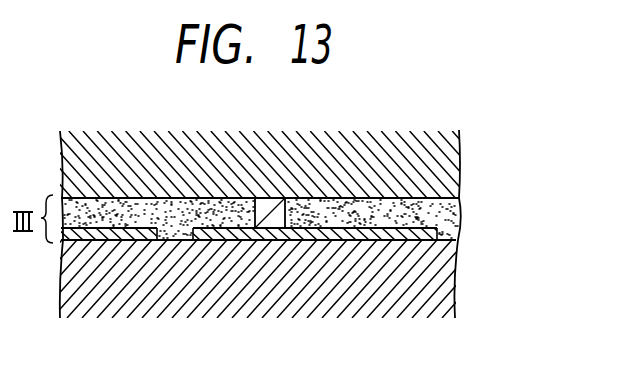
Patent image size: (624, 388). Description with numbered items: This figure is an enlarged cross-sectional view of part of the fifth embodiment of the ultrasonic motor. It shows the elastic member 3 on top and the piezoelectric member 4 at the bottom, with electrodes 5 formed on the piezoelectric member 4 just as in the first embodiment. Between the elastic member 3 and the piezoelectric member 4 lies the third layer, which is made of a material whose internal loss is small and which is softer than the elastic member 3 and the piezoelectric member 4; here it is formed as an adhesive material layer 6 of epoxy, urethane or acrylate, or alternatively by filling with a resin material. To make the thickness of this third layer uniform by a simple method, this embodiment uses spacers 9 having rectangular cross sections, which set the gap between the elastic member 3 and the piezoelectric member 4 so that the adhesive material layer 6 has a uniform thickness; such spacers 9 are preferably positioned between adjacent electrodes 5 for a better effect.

The elastic member 3 is at (435, 162).
The piezoelectric member 4 is at (429, 283).
The electrodes 5 is at (131, 233).
The adhesive material layer 6 is at (445, 215).
The spacers 9 is at (266, 206).